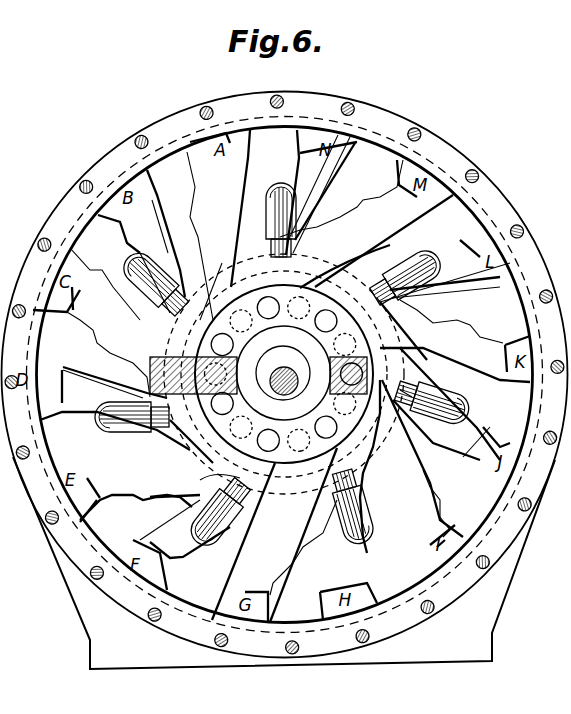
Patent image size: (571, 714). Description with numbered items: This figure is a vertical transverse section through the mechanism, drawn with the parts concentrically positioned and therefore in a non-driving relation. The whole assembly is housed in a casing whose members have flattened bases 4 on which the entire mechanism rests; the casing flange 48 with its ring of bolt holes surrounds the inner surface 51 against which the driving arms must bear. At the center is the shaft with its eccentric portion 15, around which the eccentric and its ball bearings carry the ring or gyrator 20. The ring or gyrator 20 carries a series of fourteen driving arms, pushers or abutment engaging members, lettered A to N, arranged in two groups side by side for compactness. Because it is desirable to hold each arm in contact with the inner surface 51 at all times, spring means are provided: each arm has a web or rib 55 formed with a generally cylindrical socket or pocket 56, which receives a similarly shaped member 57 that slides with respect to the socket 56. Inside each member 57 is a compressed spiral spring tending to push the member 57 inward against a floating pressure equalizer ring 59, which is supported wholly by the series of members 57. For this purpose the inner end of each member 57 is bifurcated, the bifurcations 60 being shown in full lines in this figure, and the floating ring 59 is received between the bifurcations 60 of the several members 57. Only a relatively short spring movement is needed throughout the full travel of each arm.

The flattened base 4 is at (92, 661).
The eccentric portion 15 is at (284, 374).
The ring or gyrator 20 is at (381, 440).
The casing flange ring 48 is at (335, 140).
The inner surface 51 is at (120, 167).
The web or rib 55 is at (315, 180).
The socket or pocket 56 is at (280, 183).
The sliding member 57 is at (282, 254).
The floating pressure equalizer ring 59 is at (166, 350).
The bifurcation 60 is at (230, 481).